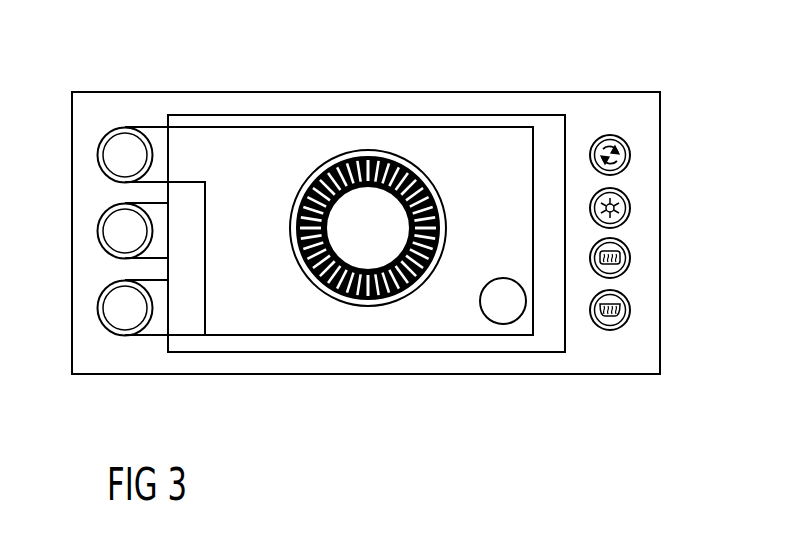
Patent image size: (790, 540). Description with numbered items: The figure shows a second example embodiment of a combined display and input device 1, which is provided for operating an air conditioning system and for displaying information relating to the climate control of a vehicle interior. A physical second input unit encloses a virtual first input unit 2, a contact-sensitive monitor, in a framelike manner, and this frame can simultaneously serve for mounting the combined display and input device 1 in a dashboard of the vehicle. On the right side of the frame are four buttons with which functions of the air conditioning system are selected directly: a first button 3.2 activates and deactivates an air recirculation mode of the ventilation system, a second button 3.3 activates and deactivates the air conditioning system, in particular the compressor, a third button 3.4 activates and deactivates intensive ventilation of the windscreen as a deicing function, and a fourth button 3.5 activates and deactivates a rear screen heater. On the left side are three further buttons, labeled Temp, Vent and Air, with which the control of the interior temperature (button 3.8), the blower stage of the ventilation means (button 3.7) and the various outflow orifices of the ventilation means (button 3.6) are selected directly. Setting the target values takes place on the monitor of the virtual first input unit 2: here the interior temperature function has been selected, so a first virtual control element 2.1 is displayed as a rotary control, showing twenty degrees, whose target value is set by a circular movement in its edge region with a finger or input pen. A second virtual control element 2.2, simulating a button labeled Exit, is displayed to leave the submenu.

The combined display and input device 1 is at (98, 52).
The virtual first input unit 2 is at (462, 140).
The first virtual control element 2.1 is at (378, 300).
The second virtual control element 2.2 is at (505, 318).
The first button 3.2 is at (632, 155).
The second button 3.3 is at (632, 208).
The third button 3.4 is at (632, 258).
The fourth button 3.5 is at (632, 310).
The button for outflow orifices 3.6 is at (103, 311).
The button for blower stage 3.7 is at (103, 234).
The button for interior temperature 3.8 is at (103, 158).